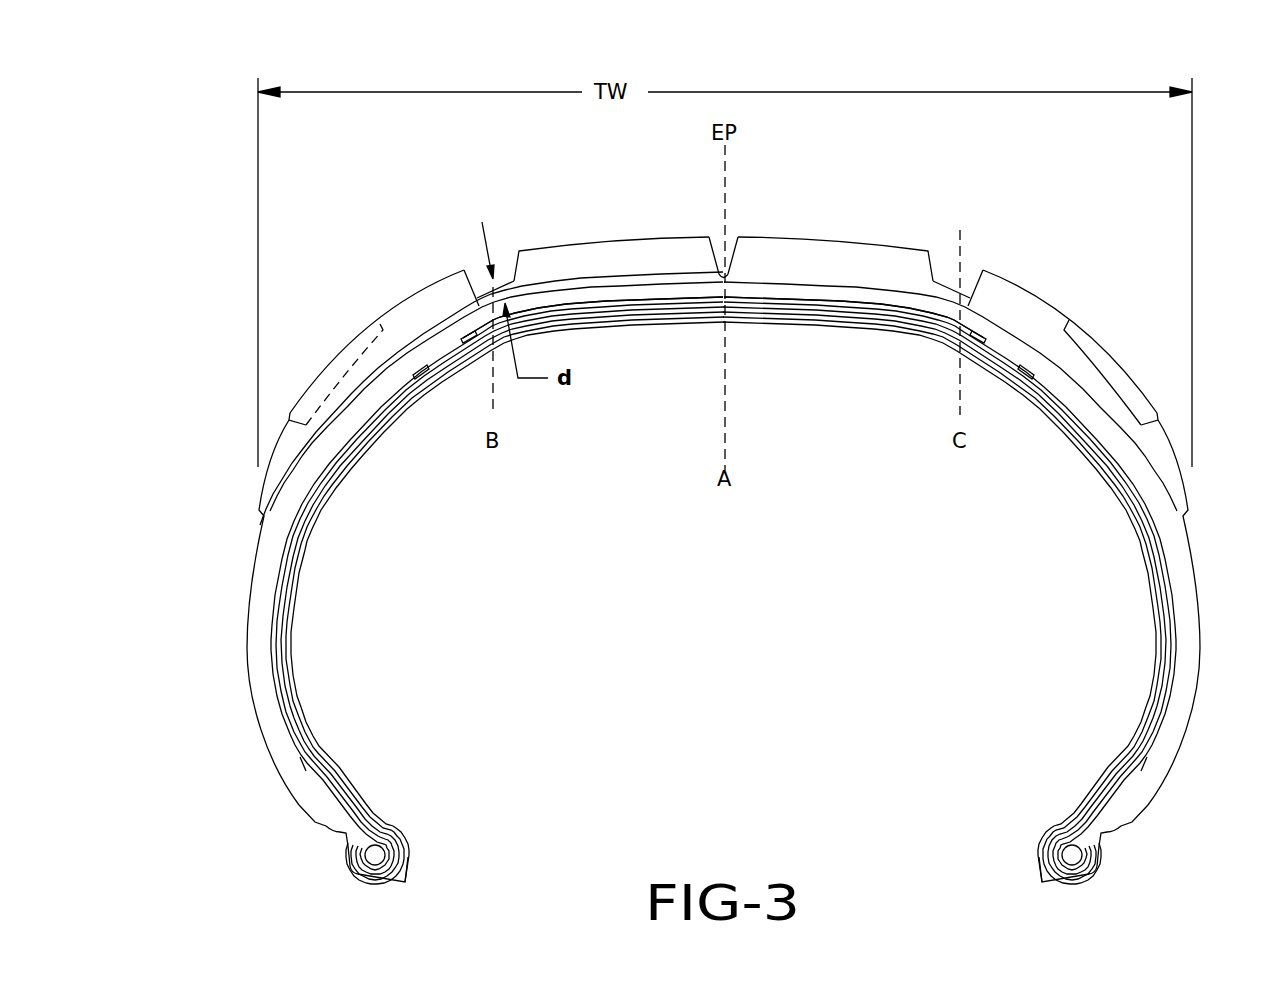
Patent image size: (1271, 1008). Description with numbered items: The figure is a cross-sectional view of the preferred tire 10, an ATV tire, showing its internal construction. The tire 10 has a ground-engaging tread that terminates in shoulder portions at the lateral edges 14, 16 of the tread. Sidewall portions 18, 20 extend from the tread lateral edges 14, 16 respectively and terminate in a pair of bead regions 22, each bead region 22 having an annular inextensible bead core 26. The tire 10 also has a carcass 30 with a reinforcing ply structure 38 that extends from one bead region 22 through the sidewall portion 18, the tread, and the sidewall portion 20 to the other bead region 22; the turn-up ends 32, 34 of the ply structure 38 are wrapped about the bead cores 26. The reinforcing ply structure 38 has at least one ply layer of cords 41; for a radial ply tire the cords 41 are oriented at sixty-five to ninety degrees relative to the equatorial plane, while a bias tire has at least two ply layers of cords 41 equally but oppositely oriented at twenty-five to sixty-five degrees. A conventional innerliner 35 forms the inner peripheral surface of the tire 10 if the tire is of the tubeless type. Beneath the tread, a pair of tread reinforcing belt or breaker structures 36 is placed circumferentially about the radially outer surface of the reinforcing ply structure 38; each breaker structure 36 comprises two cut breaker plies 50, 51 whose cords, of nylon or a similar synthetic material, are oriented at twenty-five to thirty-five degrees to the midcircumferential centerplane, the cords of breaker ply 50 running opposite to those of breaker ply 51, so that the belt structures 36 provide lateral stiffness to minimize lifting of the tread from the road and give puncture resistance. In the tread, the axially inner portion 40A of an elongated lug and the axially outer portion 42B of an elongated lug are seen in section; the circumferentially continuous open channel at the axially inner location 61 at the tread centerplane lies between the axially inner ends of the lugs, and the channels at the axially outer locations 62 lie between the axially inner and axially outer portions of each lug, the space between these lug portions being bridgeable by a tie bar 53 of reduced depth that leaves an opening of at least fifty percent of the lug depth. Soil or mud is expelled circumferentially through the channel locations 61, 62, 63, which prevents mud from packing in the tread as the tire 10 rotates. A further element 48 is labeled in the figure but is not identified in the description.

The tire 10 is at (181, 443).
The lateral edge 14 is at (258, 241).
The lateral edge 16 is at (1192, 241).
The sidewall portion 18 is at (1190, 710).
The sidewall portion 20 is at (257, 710).
The bead region 22 is at (1057, 823).
The bead core 26 is at (1070, 855).
The carcass 30 is at (919, 342).
The turn-up end 32 is at (1147, 757).
The turn-up end 34 is at (300, 758).
The innerliner 35 is at (1150, 707).
The belt or breaker structure 36 is at (683, 312).
The reinforcing ply structure 38 is at (1172, 655).
The cords 41 is at (505, 600).
The axially inner portion 40A is at (620, 236).
The axially outer portion 42B is at (433, 282).
The apex 48 is at (1085, 828).
The breaker ply 50 is at (792, 301).
The breaker ply 51 is at (843, 308).
The tie bar 53 is at (480, 283).
The axially inner location 61 is at (716, 255).
The axially outer location 62 is at (503, 266).
The channel location 63 is at (946, 265).